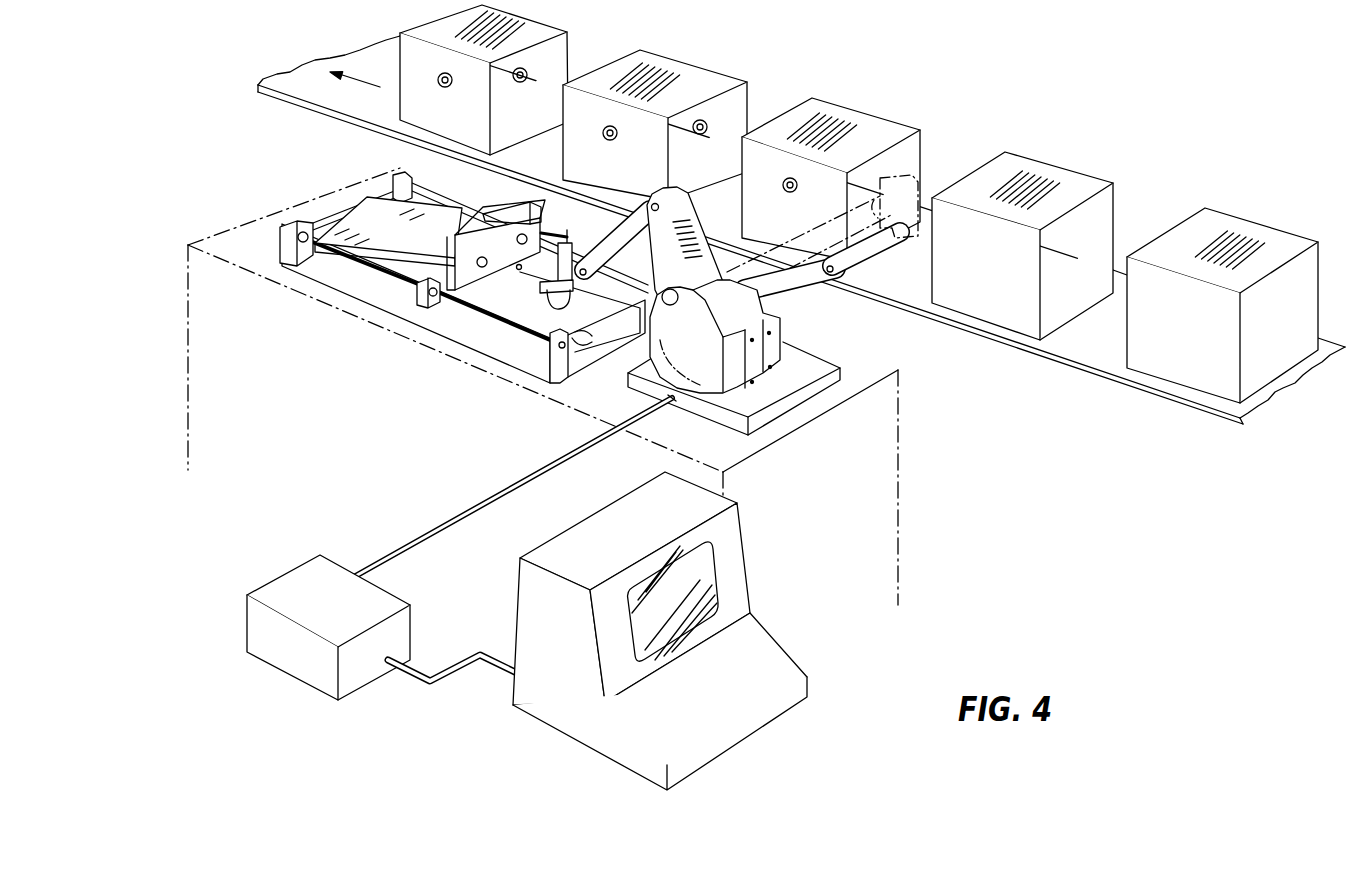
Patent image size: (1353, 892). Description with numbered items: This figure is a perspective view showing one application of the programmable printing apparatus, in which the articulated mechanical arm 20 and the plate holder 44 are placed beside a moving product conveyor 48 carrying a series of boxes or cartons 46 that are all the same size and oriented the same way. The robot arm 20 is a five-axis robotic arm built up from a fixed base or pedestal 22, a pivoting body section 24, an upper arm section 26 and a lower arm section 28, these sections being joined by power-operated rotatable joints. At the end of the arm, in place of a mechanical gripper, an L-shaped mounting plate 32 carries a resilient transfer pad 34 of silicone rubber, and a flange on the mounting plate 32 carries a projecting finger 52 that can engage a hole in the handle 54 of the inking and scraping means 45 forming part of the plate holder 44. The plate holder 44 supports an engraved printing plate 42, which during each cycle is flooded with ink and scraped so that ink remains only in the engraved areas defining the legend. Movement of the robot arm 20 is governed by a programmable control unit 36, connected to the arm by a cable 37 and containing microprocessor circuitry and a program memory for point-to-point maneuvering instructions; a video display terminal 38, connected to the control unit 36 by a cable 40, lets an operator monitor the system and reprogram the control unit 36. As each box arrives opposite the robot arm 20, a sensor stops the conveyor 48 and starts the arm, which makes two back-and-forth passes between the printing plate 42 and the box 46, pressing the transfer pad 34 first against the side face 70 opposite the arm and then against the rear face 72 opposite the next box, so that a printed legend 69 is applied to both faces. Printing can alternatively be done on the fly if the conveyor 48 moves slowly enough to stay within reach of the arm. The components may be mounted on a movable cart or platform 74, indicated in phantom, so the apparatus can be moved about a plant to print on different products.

The articulated mechanical arm 20 is at (800, 327).
The fixed base or pedestal 22 is at (808, 400).
The pivoting body section 24 is at (737, 362).
The upper arm section 26 is at (684, 220).
The lower arm section 28 is at (628, 232).
The L-shaped mounting plate 32 is at (590, 342).
The resilient transfer pad 34 is at (545, 297).
The programmable control unit 36 is at (306, 610).
The cable 37 is at (505, 492).
The video display terminal 38 is at (760, 640).
The cable 40 is at (455, 661).
The engraved printing plate 42 is at (588, 343).
The plate holder 44 is at (378, 312).
The means for inking and scraping the plate 45 is at (432, 222).
The boxes or cartons 46 is at (570, 47).
The moving product conveyor 48 is at (1078, 362).
The projecting finger 52 is at (570, 240).
The handle 54 is at (505, 215).
The printed legend 69 is at (614, 138).
The side face 70 is at (770, 160).
The rear face 72 is at (880, 170).
The movable cart or platform 74 is at (903, 420).